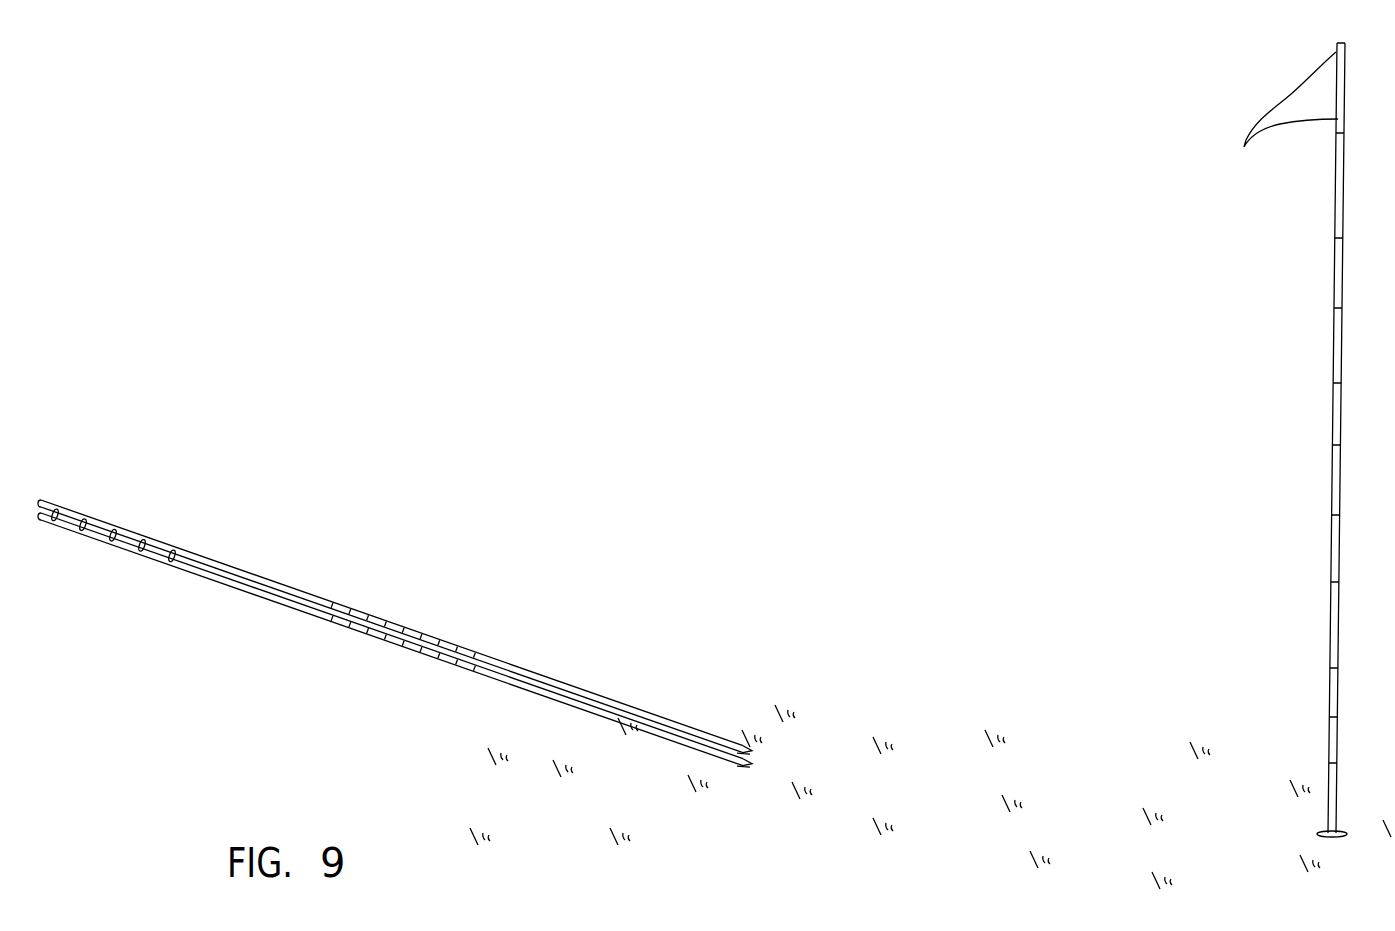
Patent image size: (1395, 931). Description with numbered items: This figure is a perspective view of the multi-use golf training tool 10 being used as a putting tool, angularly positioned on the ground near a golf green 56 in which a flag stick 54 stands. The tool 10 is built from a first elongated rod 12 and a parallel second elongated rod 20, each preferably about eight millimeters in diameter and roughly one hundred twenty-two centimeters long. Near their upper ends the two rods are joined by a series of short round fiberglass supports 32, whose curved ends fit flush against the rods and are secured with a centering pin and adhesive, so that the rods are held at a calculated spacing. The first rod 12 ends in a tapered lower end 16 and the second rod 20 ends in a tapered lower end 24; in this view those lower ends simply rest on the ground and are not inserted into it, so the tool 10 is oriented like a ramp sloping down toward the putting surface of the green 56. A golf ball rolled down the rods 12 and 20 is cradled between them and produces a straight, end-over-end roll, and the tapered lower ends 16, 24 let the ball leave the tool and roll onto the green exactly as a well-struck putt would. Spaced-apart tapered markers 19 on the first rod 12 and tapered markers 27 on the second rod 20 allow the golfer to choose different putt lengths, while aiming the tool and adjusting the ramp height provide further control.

The multi-use golf training tool 10 is at (442, 648).
The first elongated rod 12 is at (205, 578).
The tapered lower end 16 is at (680, 740).
The tapered markers 19 is at (405, 640).
The second elongated rod 20 is at (193, 550).
The tapered lower end 24 is at (713, 737).
The tapered markers 27 is at (420, 632).
The round fiberglass supports 32 is at (87, 517).
The flag stick 54 is at (1333, 558).
The golf green 56 is at (1075, 731).